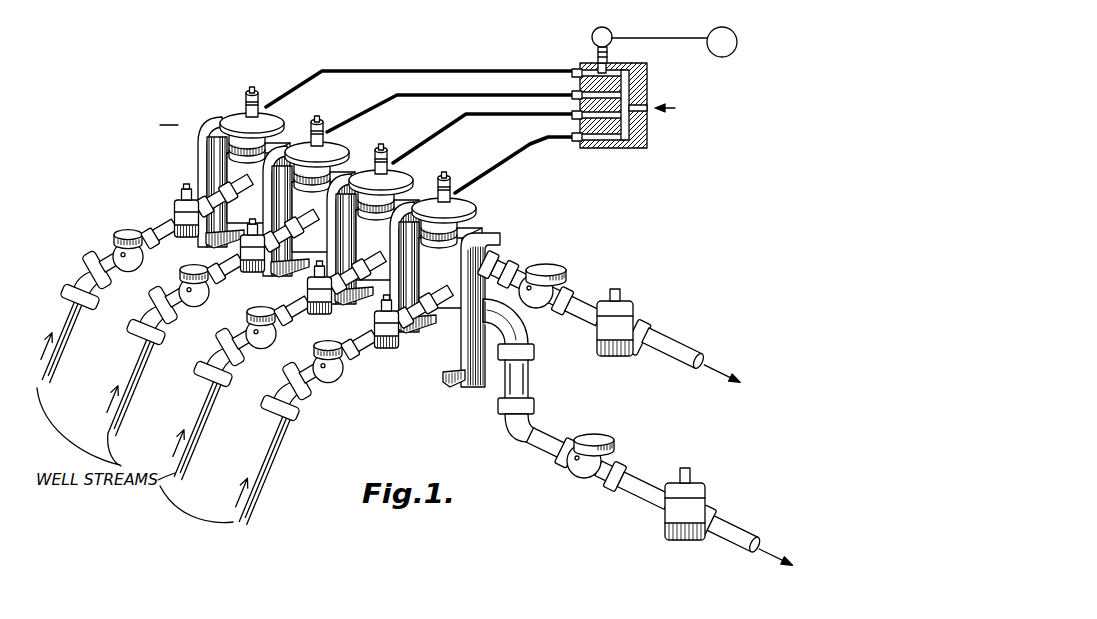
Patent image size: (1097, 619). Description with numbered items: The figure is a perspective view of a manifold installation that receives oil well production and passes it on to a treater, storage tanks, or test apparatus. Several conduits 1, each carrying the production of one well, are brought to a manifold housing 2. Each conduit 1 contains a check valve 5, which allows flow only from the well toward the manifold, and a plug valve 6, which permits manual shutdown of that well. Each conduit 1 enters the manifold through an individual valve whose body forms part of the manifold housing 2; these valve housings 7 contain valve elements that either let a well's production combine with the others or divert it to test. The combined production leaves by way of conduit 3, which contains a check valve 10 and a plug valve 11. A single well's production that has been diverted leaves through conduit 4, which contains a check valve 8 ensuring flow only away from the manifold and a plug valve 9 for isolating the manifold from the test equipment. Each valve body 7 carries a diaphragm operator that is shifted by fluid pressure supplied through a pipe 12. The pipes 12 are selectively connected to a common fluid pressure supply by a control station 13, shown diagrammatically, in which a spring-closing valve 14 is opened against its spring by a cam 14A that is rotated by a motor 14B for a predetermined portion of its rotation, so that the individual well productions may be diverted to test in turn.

The conduit 1 is at (281, 490).
The manifold housing 2 is at (330, 237).
The conduit 3 is at (530, 375).
The conduit 4 is at (678, 340).
The check valve 5 is at (274, 284).
The plug valve 6 is at (400, 336).
The valve housing 7 is at (340, 210).
The check valve 8 is at (553, 258).
The plug valve 9 is at (628, 303).
The check valve 10 is at (605, 437).
The plug valve 11 is at (700, 482).
The pipe 12 is at (492, 165).
The control station 13 is at (630, 150).
The spring-closing valve 14 is at (597, 55).
The cam 14A is at (597, 29).
The motor 14B is at (735, 34).